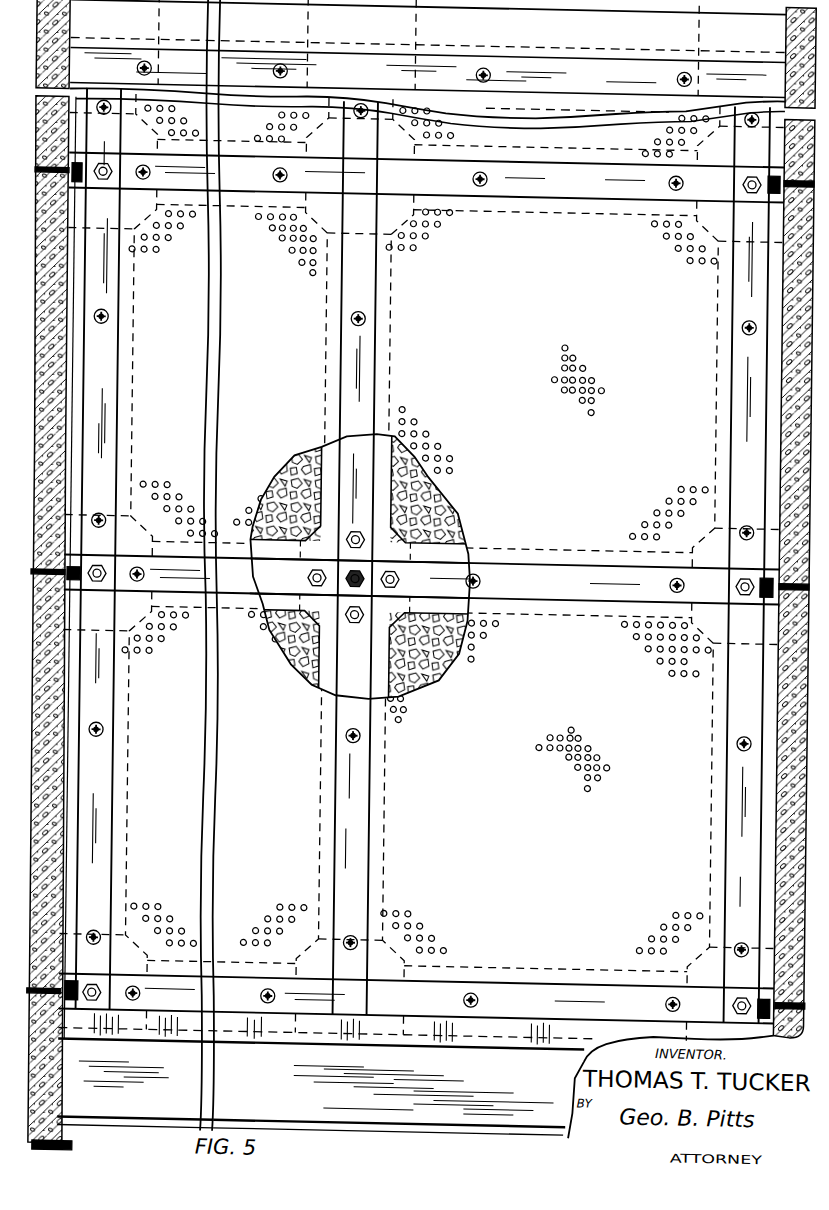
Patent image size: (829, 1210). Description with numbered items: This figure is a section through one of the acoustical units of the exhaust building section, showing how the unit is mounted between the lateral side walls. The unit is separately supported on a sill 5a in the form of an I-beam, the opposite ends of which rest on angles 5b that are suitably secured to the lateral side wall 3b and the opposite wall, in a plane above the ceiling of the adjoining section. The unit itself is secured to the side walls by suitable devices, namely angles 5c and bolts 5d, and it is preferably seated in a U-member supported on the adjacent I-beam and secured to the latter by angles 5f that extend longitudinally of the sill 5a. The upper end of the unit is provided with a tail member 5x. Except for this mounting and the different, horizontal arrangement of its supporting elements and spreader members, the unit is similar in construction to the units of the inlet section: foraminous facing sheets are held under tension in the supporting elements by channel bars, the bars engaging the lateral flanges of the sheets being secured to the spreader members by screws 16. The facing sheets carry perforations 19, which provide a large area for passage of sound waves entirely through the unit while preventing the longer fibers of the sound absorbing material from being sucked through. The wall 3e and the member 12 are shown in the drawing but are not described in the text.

The tail member 5x is at (634, 38).
The sill 5a is at (364, 1113).
The angle 5b is at (117, 1138).
The angle 5c is at (110, 570).
The bolt 5d is at (103, 590).
The angle 5f is at (519, 1031).
The screw 16 is at (477, 186).
The perforation 19 is at (309, 273).
The cross member 12 is at (433, 589).
The right form wall 3e is at (781, 903).
The lateral side wall 3b is at (70, 1098).